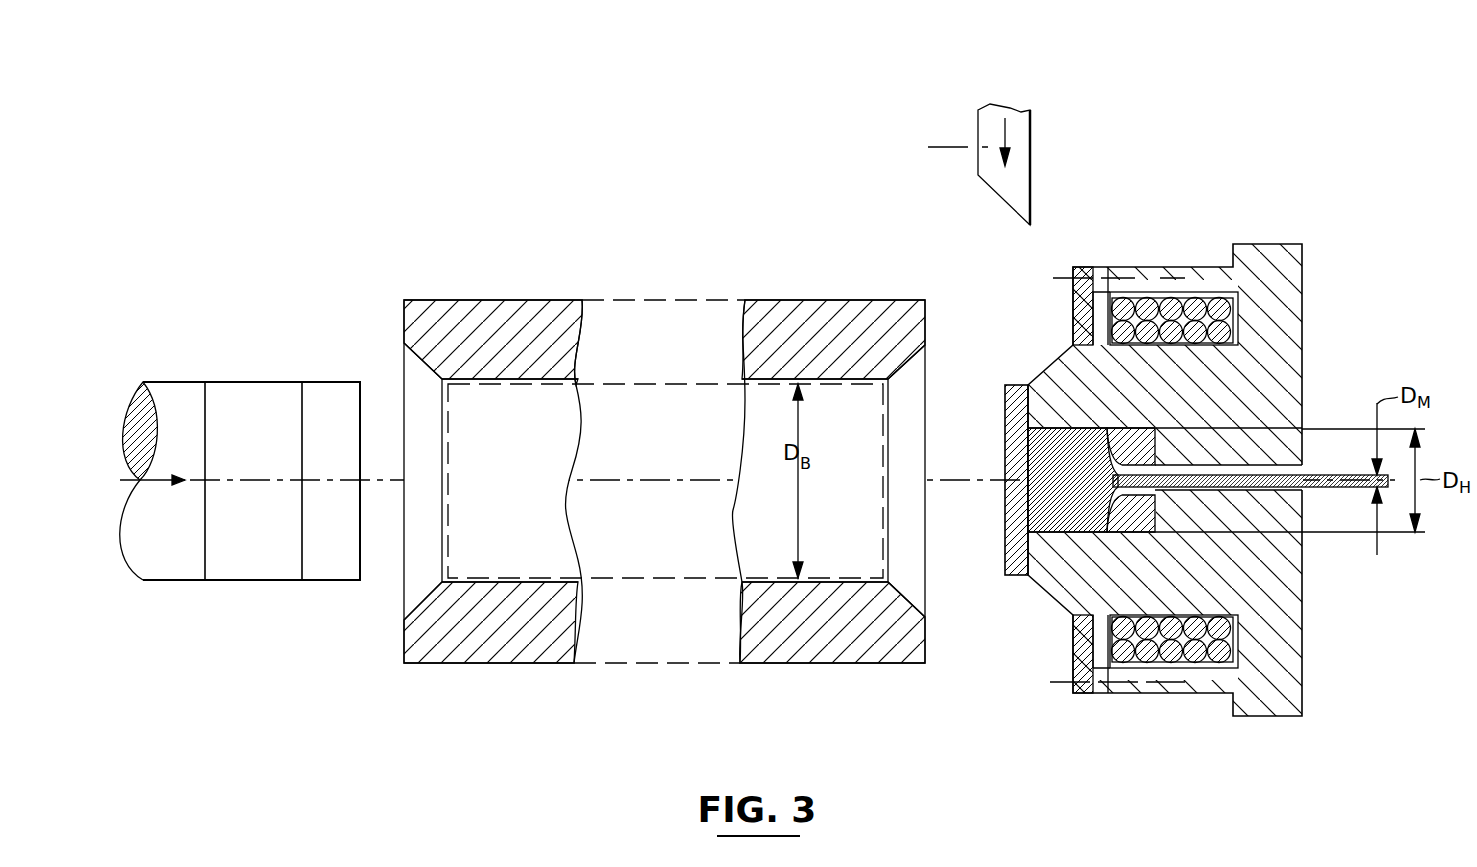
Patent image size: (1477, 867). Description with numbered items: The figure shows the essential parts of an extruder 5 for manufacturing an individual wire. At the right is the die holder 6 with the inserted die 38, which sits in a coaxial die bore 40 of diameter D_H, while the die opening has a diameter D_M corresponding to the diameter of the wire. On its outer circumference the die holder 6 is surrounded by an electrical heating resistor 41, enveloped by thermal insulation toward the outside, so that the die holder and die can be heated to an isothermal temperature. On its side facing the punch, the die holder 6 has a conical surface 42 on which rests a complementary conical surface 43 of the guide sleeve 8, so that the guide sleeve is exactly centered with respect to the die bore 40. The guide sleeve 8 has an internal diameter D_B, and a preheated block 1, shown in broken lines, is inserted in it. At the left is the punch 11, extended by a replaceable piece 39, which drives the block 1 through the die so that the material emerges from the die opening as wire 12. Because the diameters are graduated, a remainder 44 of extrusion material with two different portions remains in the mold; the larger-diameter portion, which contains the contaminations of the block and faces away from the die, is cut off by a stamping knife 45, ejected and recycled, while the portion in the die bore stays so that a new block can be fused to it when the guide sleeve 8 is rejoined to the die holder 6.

The block 1 is at (665, 580).
The extruder 5 is at (667, 201).
The die holder 6 is at (1268, 678).
The guide sleeve 8 is at (803, 650).
The punch 11 is at (178, 395).
The wire 12 is at (1362, 490).
The die 38 is at (1137, 450).
The replaceable piece 39 is at (246, 395).
The die bore 40 is at (1092, 526).
The electrical heating resistor 41 is at (1146, 291).
The conical surface 42 is at (1046, 364).
The complementary conical surface 43 is at (907, 593).
The remainder 44 is at (1040, 452).
The cutting tool 45 is at (1017, 132).